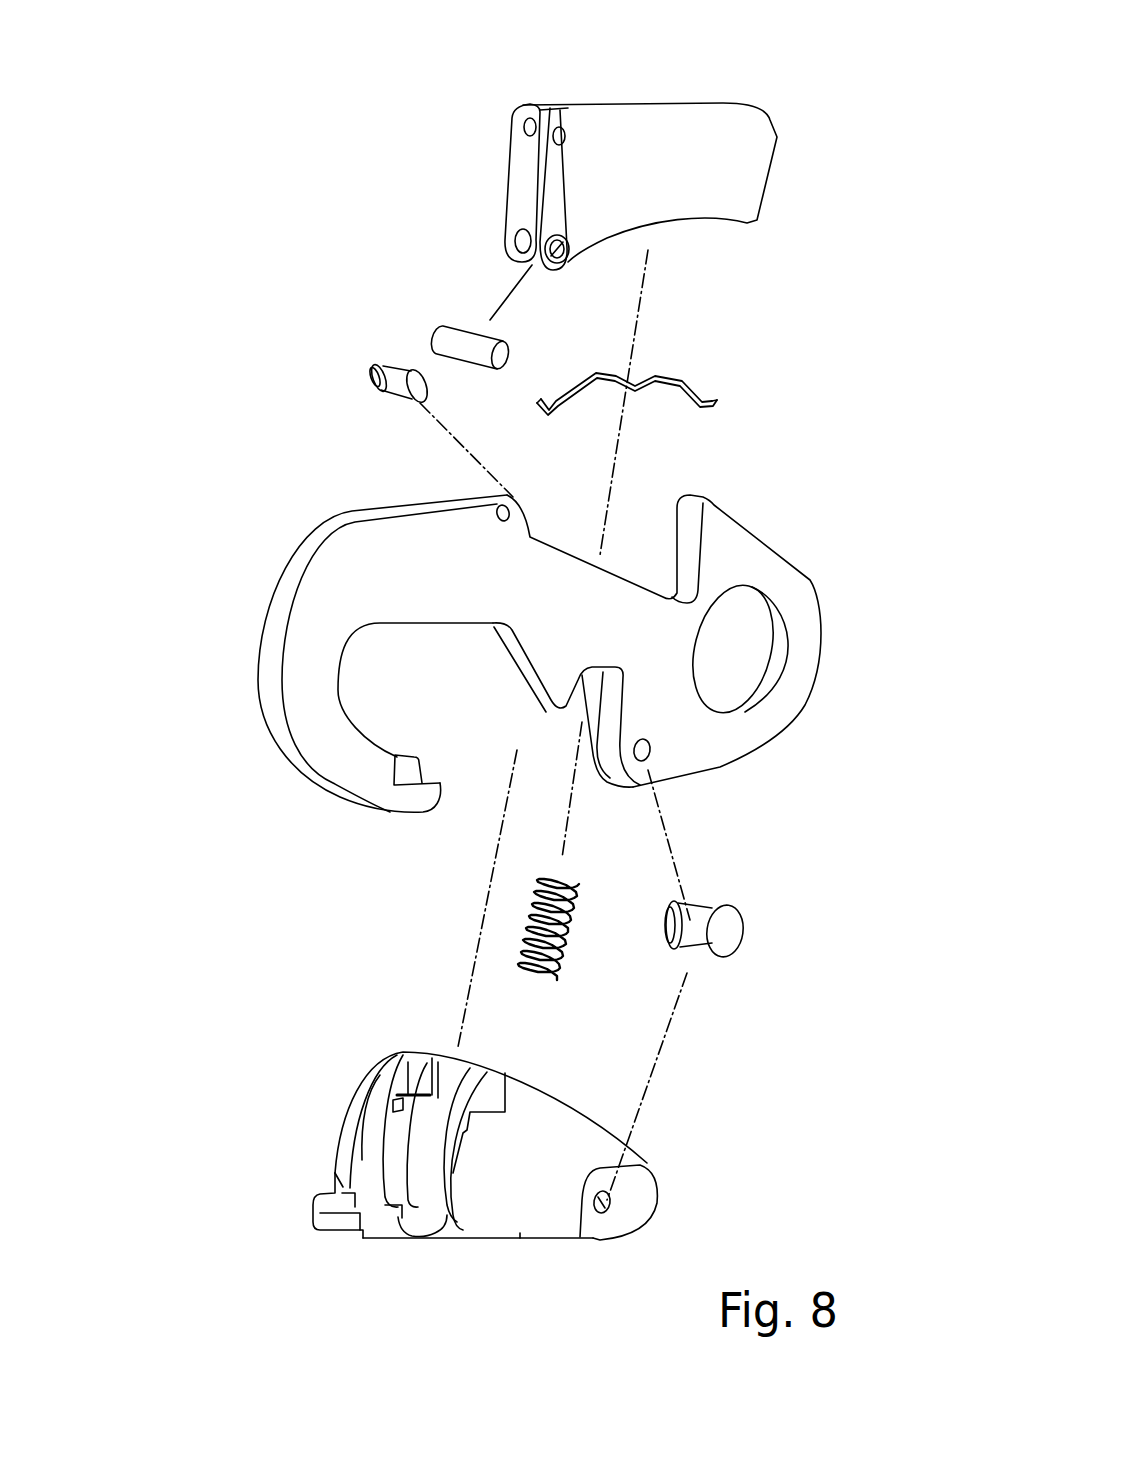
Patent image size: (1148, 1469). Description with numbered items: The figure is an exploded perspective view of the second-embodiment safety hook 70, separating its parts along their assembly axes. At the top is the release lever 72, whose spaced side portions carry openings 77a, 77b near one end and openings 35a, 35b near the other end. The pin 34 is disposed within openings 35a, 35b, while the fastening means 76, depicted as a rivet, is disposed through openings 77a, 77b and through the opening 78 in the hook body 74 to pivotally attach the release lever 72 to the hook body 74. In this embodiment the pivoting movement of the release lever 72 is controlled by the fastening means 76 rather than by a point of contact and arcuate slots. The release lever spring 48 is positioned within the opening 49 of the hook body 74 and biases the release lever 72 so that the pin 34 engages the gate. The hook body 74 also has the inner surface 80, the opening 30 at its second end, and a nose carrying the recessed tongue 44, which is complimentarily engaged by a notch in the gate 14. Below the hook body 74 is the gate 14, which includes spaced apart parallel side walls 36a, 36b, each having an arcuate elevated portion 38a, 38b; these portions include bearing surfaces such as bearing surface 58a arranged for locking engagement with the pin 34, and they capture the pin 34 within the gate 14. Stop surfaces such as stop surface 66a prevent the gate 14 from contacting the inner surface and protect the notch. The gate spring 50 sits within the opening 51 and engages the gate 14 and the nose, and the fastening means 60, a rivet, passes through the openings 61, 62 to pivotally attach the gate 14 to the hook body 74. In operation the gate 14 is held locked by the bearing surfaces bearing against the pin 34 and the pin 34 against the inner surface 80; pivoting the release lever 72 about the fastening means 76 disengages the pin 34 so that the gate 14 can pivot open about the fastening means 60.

The safety hook 70 is at (232, 162).
The release lever 72 is at (605, 160).
The opening 77a is at (528, 126).
The opening 77b is at (564, 138).
The opening 35a is at (525, 232).
The opening 35b is at (562, 240).
The pin 34 is at (457, 338).
The fastening means 76 is at (378, 374).
The release lever spring 48 is at (680, 378).
The opening 49 is at (643, 530).
The opening 78 is at (498, 522).
The opening 51 is at (592, 683).
The inner surface 80 is at (512, 652).
The opening 30 is at (740, 665).
The recessed tongue 44 is at (410, 775).
The opening 61 is at (636, 765).
The hook body 74 is at (574, 674).
The gate spring 50 is at (570, 923).
The fastening means 60 is at (713, 930).
The side wall 36a is at (440, 1090).
The bearing surface 58a is at (410, 1107).
The arcuate elevated portion 38a is at (373, 1112).
The stop surface 66a is at (360, 1205).
The arcuate elevated portion 38b is at (420, 1220).
The gate 14 is at (490, 1135).
The side wall 36b is at (525, 1225).
The opening 62 is at (607, 1207).